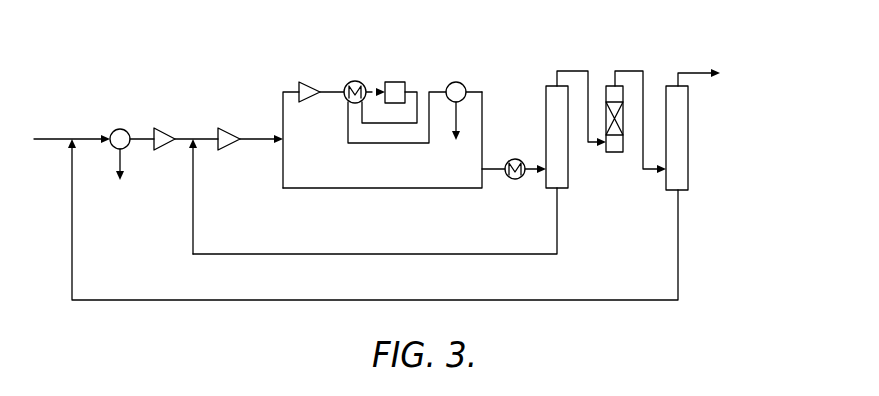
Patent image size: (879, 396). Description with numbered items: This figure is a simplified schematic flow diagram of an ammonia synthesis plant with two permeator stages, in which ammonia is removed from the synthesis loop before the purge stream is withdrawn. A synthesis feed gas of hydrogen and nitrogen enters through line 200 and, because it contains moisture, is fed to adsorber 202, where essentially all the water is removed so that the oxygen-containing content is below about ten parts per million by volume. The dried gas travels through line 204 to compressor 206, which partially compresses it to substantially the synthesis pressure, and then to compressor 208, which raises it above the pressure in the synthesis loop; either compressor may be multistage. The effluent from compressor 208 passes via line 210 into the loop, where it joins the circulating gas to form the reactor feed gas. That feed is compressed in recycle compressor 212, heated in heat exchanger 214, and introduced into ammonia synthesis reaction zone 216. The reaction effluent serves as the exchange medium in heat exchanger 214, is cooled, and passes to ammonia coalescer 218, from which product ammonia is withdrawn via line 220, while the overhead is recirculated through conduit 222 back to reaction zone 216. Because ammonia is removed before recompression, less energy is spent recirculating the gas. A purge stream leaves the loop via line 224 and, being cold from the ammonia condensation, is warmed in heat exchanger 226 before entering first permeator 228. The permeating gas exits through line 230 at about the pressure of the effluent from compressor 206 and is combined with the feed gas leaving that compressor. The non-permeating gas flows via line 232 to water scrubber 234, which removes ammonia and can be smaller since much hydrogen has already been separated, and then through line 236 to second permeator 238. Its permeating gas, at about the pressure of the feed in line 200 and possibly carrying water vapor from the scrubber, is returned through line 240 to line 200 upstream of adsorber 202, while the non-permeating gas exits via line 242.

The line 200 is at (50, 134).
The adsorber 202 is at (124, 128).
The line 204 is at (140, 143).
The compressor 206 is at (172, 132).
The compressor 208 is at (231, 150).
The line 210 is at (253, 135).
The recycle compressor 212 is at (310, 81).
The heat exchanger 214 is at (353, 79).
The ammonia synthesis reaction zone 216 is at (397, 82).
The ammonia coalescer 218 is at (455, 80).
The line 220 is at (450, 122).
The conduit 222 is at (488, 102).
The line 224 is at (490, 165).
The heat exchanger 226 is at (506, 178).
The first permeator 228 is at (567, 190).
The line 230 is at (503, 255).
The line 232 is at (576, 68).
The water scrubber 234 is at (618, 152).
The line 236 is at (628, 68).
The second permeator 238 is at (688, 165).
The line 240 is at (678, 237).
The line 242 is at (694, 73).